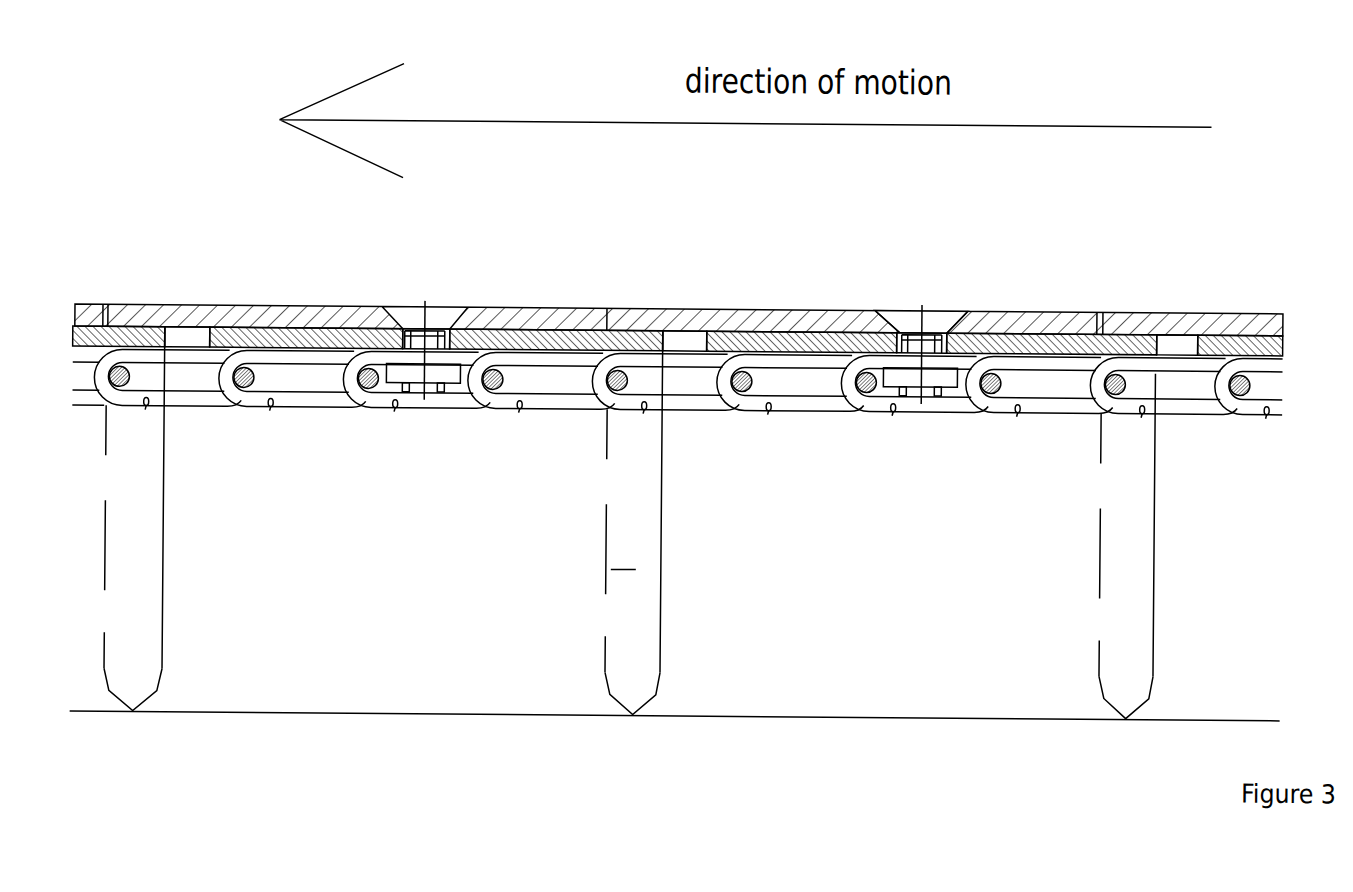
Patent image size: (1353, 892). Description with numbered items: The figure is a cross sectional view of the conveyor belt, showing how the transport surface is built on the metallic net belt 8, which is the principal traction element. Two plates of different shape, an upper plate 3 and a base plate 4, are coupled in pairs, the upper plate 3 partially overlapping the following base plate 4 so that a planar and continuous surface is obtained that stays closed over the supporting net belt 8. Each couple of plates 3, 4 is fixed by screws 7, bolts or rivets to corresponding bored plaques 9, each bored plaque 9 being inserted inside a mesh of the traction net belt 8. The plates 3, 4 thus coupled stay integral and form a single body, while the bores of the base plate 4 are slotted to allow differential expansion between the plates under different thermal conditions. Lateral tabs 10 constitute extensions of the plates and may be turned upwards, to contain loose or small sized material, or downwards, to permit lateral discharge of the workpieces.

The upper plate 3 is at (1010, 317).
The base plate 4 is at (753, 342).
The screws 7 is at (908, 316).
The metallic net belt 8 is at (866, 402).
The bored plaques 9 is at (937, 370).
The lateral tabs 10 is at (322, 580).